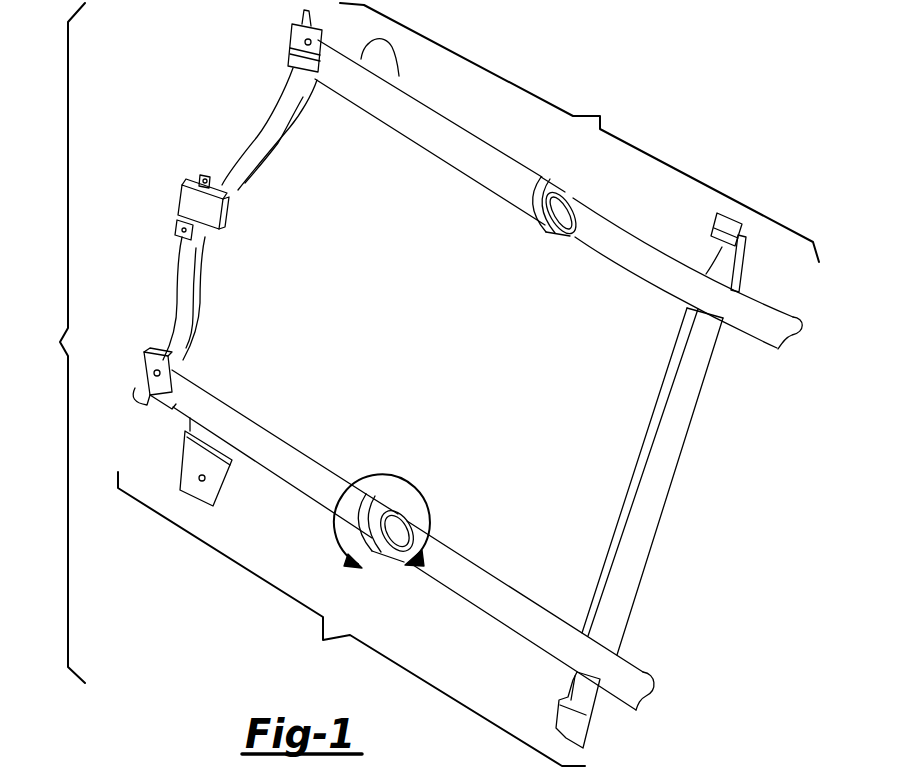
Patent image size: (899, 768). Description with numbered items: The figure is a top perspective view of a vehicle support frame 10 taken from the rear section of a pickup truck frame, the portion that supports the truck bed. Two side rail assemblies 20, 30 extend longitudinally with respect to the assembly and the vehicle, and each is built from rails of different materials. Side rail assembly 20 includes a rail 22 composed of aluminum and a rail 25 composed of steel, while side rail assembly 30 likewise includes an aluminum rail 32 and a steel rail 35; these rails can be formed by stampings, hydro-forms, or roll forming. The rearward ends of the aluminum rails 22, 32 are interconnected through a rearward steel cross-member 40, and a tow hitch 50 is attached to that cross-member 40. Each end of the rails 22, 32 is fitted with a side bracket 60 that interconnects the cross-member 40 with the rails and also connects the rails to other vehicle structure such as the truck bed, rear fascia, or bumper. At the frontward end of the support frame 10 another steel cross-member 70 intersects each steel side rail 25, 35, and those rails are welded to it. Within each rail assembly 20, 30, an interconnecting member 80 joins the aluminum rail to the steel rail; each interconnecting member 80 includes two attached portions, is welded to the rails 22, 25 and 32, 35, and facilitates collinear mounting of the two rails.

The vehicle support frame 10 is at (55, 343).
The side rail assembly 20 is at (386, 568).
The rail 22 is at (263, 460).
The rail 25 is at (497, 612).
The side rail assembly 30 is at (567, 176).
The rail 32 is at (467, 153).
The rail 35 is at (600, 240).
The rearward steel cross-member 40 is at (270, 127).
The tow hitch 50 is at (183, 195).
The side bracket 60 is at (290, 30).
The steel cross-member 70 is at (668, 500).
The interconnecting member 80 is at (388, 512).